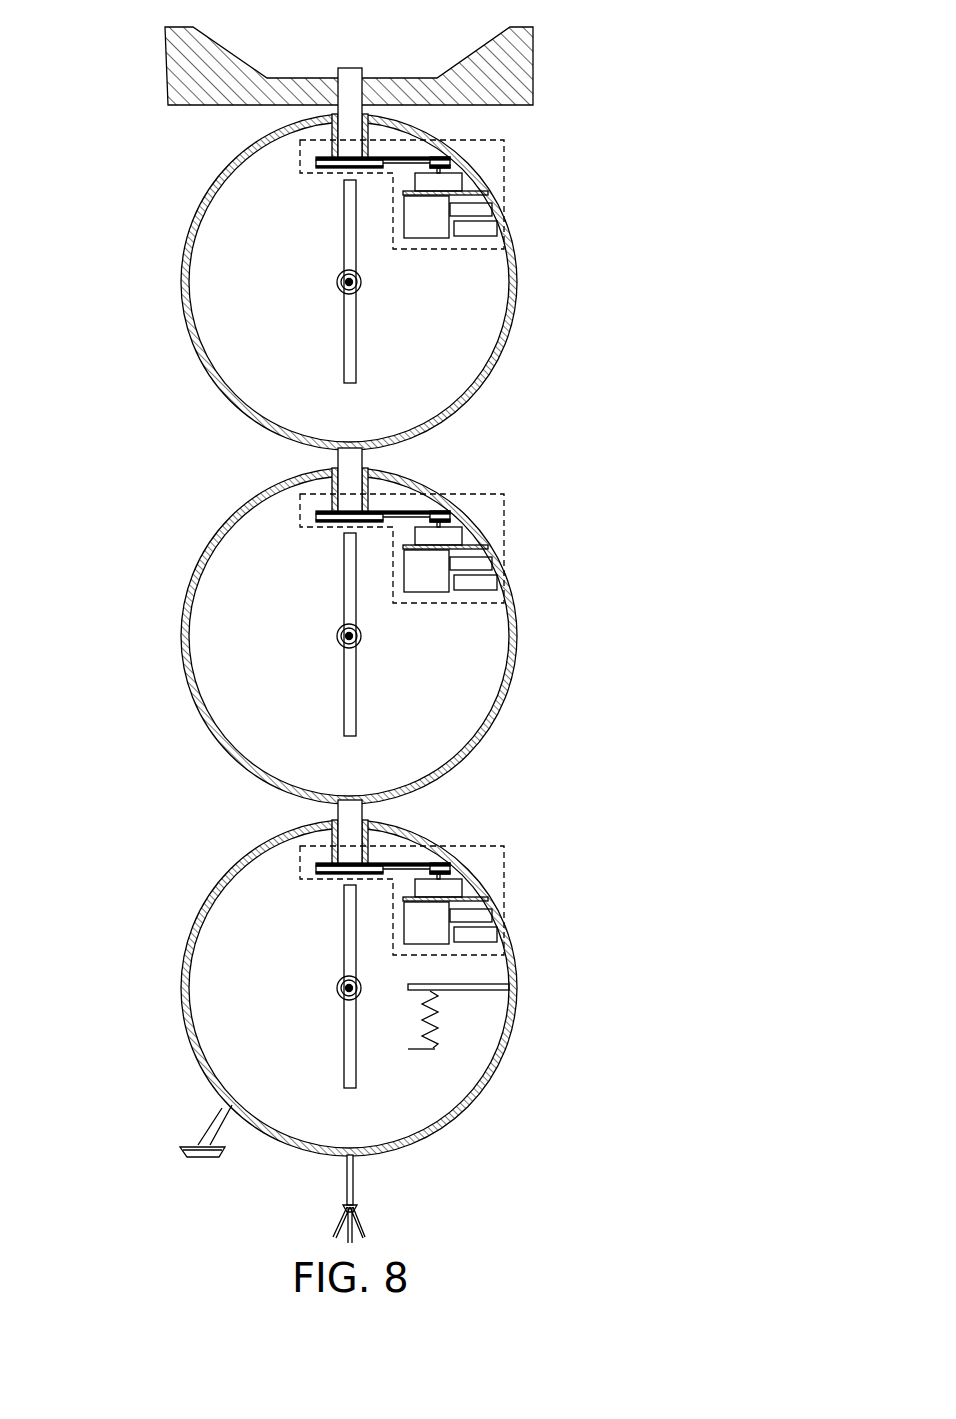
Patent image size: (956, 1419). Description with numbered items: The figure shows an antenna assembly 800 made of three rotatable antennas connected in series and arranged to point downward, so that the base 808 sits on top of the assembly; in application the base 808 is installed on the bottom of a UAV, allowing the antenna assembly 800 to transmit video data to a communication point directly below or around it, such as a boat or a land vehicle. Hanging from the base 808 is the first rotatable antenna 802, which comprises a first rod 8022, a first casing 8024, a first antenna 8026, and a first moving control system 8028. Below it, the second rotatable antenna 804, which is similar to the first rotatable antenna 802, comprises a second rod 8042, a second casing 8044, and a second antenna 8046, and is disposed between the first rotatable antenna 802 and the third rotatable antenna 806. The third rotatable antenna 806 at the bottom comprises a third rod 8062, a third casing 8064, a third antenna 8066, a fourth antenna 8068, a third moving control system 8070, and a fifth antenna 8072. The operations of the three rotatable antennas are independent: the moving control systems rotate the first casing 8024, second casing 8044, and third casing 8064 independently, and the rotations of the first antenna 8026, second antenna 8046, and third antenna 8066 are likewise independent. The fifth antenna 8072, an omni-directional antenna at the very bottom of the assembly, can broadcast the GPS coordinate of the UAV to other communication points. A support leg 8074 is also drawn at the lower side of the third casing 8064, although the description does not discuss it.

The antenna assembly 800 is at (446, 626).
The base 808 is at (522, 67).
The first rotatable antenna 802 is at (445, 231).
The first rod 8022 is at (350, 70).
The first casing 8024 is at (519, 288).
The first antenna 8026 is at (344, 338).
The first moving control system 8028 is at (504, 168).
The second rotatable antenna 804 is at (444, 626).
The second rod 8042 is at (362, 458).
The second casing 8044 is at (519, 642).
The second antenna 8046 is at (344, 691).
The third rotatable antenna 806 is at (420, 1021).
The third rod 8062 is at (362, 810).
The third casing 8064 is at (519, 992).
The third antenna 8066 is at (344, 1043).
The fourth antenna 8068 is at (435, 1032).
The third moving control system 8070 is at (504, 872).
The fifth antenna 8072 is at (355, 1178).
The support leg 8074 is at (212, 1123).